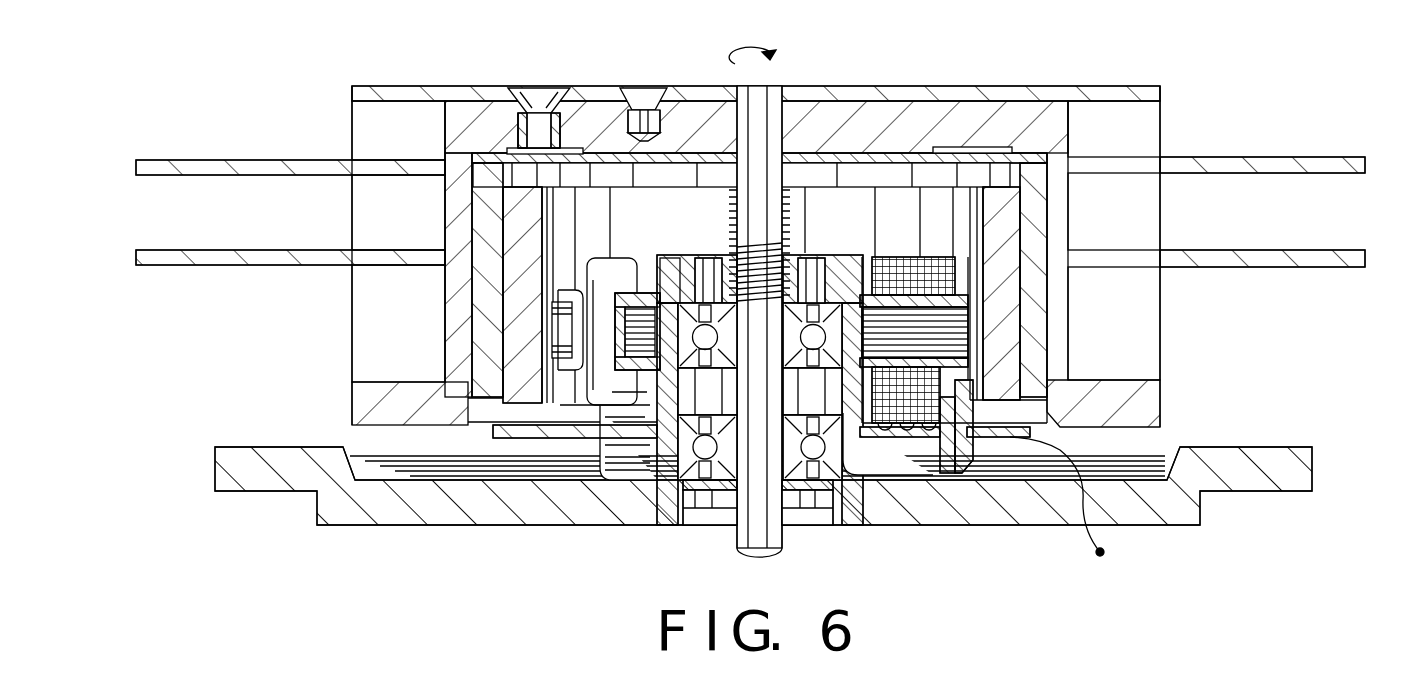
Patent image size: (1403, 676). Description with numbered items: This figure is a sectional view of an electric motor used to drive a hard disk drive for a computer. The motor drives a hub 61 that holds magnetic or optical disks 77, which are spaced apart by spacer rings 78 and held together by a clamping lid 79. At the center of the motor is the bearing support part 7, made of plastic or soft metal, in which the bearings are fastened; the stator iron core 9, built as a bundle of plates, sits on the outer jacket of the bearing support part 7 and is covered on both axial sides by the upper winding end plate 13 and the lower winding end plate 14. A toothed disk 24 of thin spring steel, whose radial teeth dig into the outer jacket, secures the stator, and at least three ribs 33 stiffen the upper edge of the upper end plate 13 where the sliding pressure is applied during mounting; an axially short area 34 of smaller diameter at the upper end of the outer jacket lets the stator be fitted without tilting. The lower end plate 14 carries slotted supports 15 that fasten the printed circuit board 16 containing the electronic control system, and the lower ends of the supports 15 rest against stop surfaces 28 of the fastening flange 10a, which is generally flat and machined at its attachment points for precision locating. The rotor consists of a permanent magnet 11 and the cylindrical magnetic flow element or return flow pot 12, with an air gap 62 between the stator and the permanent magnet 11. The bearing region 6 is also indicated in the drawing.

The rotor hub flange 6 is at (847, 417).
The bearing support part 7 is at (213, 262).
The iron core 9 is at (632, 292).
The fastening flange 10a is at (458, 510).
The permanent magnet 11 is at (1003, 247).
The return flow pot 12 is at (1033, 310).
The upper winding end plate 13 is at (640, 293).
The lower winding end plate 14 is at (632, 382).
The slotted supports 15 is at (985, 463).
The printed circuit board 16 is at (560, 432).
The toothed disk 24 is at (890, 280).
The stop surfaces 28 is at (970, 480).
The ribs 33 is at (658, 260).
The axially short area of smaller diameter 34 is at (838, 262).
The hub 61 is at (1080, 135).
The air gap 62 is at (973, 338).
The magnetic or optical disks 77 is at (206, 160).
The spacer rings 78 is at (368, 139).
The clamping lid 79 is at (418, 97).